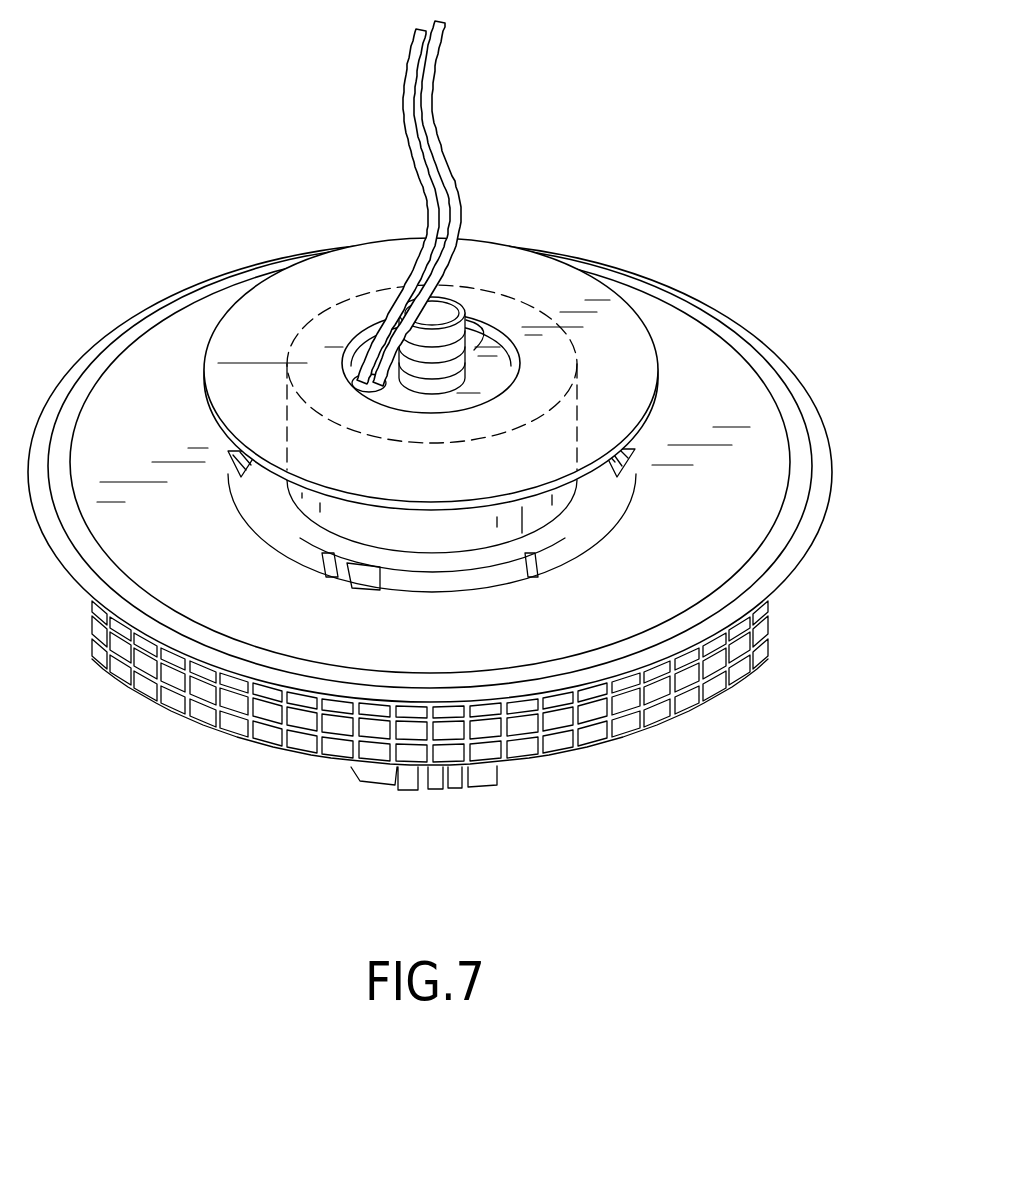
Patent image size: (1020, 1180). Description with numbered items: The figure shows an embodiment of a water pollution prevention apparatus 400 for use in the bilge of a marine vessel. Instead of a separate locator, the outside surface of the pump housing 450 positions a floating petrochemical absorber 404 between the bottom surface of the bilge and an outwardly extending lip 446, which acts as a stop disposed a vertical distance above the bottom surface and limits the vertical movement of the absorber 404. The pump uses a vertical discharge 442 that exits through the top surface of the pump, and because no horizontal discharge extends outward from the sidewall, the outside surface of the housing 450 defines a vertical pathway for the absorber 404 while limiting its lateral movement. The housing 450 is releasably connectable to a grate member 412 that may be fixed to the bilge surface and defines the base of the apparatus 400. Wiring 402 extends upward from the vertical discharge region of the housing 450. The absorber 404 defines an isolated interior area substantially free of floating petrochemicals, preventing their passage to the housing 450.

The water pollution prevention apparatus 400 is at (183, 140).
The electrical wires 402 is at (428, 124).
The floating petrochemical absorber 404 is at (772, 457).
The grate member 412 is at (463, 772).
The vertical discharge 442 is at (483, 316).
The outwardly extending lip 446 is at (615, 305).
The pump housing 450 is at (545, 507).